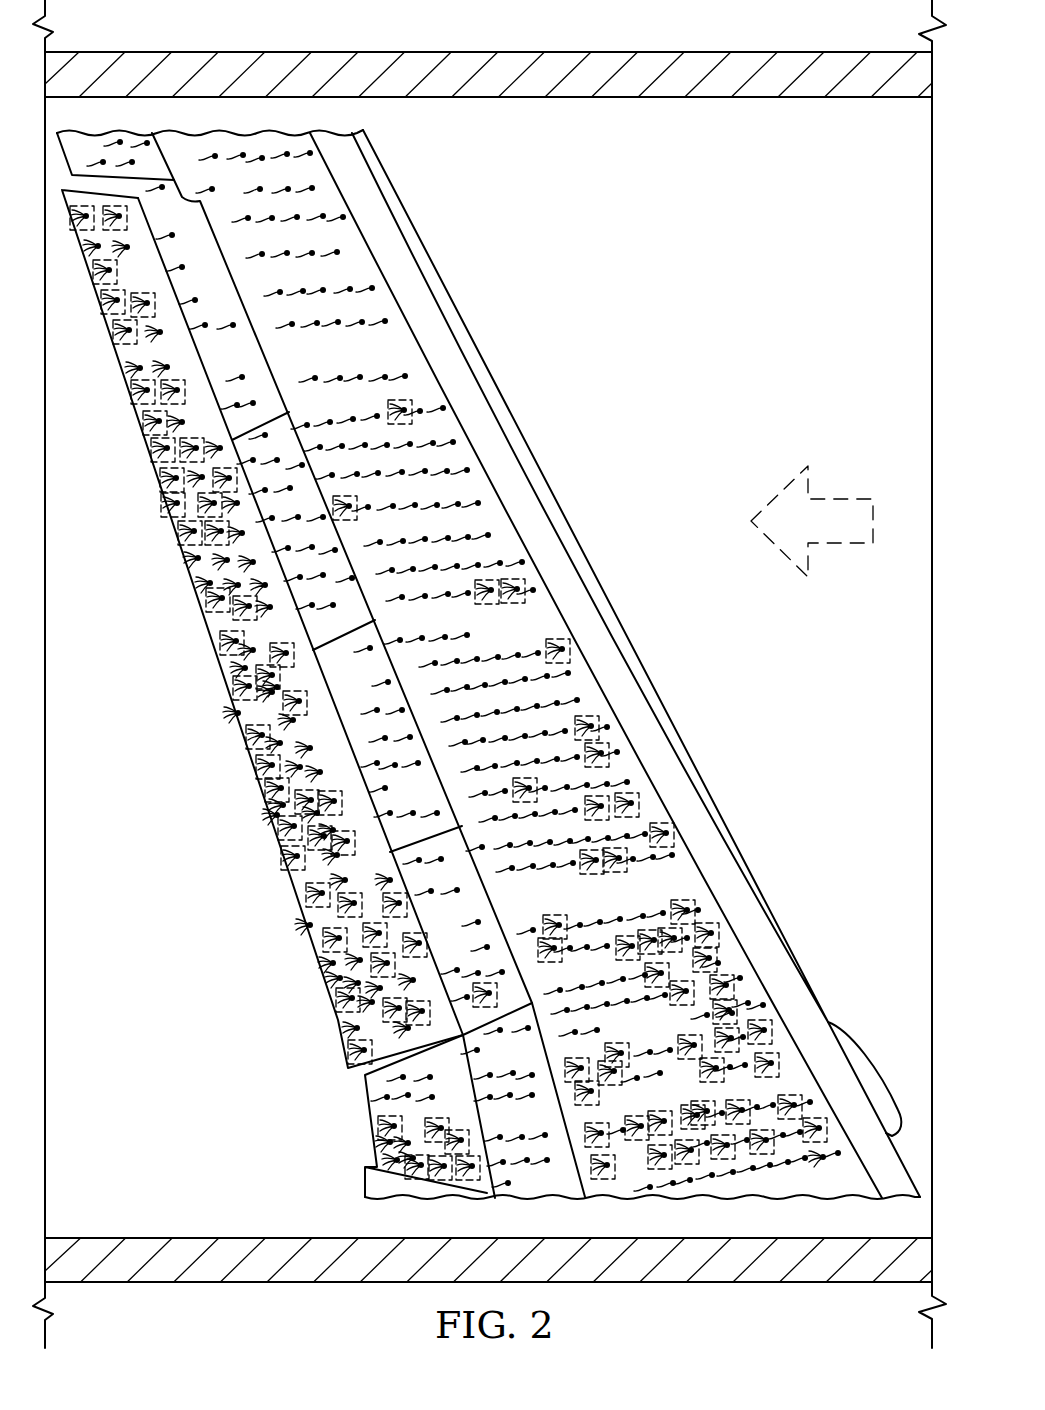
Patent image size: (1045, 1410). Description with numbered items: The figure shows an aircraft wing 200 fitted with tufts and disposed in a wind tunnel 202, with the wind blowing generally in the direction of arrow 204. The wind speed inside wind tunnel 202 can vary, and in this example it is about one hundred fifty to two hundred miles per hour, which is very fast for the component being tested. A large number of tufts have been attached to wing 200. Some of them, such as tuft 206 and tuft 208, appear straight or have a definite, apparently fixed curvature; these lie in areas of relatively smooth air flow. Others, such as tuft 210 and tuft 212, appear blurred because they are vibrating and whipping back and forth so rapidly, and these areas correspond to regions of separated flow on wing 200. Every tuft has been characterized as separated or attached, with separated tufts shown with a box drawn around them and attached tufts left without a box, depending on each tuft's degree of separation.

The wing 200 is at (675, 608).
The wind tunnel 202 is at (323, 62).
The arrow 204 is at (841, 498).
The tuft 206 is at (373, 284).
The tuft 208 is at (348, 210).
The tuft 210 is at (212, 692).
The tuft 212 is at (229, 738).